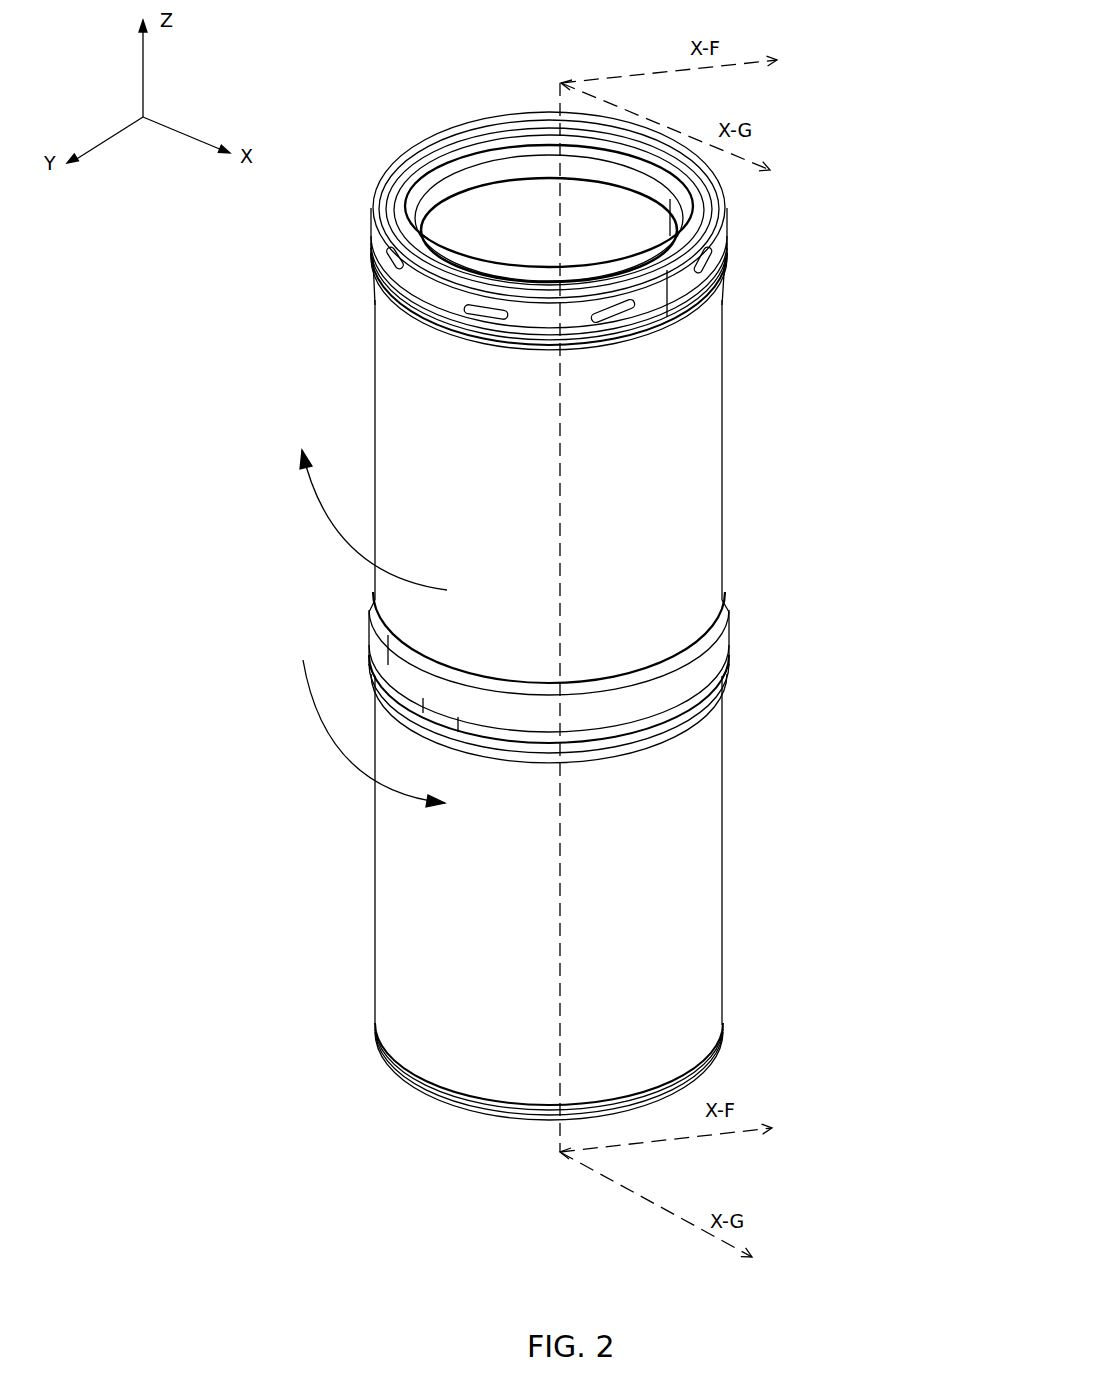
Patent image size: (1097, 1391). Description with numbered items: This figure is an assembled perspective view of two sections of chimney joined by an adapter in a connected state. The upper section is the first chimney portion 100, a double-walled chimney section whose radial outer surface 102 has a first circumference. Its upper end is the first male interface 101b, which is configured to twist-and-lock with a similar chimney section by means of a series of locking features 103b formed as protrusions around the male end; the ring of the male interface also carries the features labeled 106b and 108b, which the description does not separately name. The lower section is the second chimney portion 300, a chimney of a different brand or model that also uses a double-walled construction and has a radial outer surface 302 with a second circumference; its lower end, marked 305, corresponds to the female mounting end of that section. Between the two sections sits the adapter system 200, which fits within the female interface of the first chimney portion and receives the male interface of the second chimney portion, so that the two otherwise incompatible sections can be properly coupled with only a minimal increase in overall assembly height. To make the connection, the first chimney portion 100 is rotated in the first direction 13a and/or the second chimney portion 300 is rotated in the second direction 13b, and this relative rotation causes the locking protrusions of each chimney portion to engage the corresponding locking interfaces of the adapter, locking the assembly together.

The first chimney portion 100 is at (604, 356).
The first male interface 101b is at (415, 162).
The radial outer surface 102 is at (393, 462).
The locking features 103b is at (384, 259).
The rim band 106b is at (415, 312).
The seam / groove 108b is at (672, 299).
The first direction 13a is at (318, 518).
The second direction 13b is at (318, 733).
The adapter system 200 is at (776, 648).
The second chimney portion 300 is at (633, 898).
The radial outer surface 302 is at (378, 875).
The bottom edge of second body 305 is at (388, 1052).